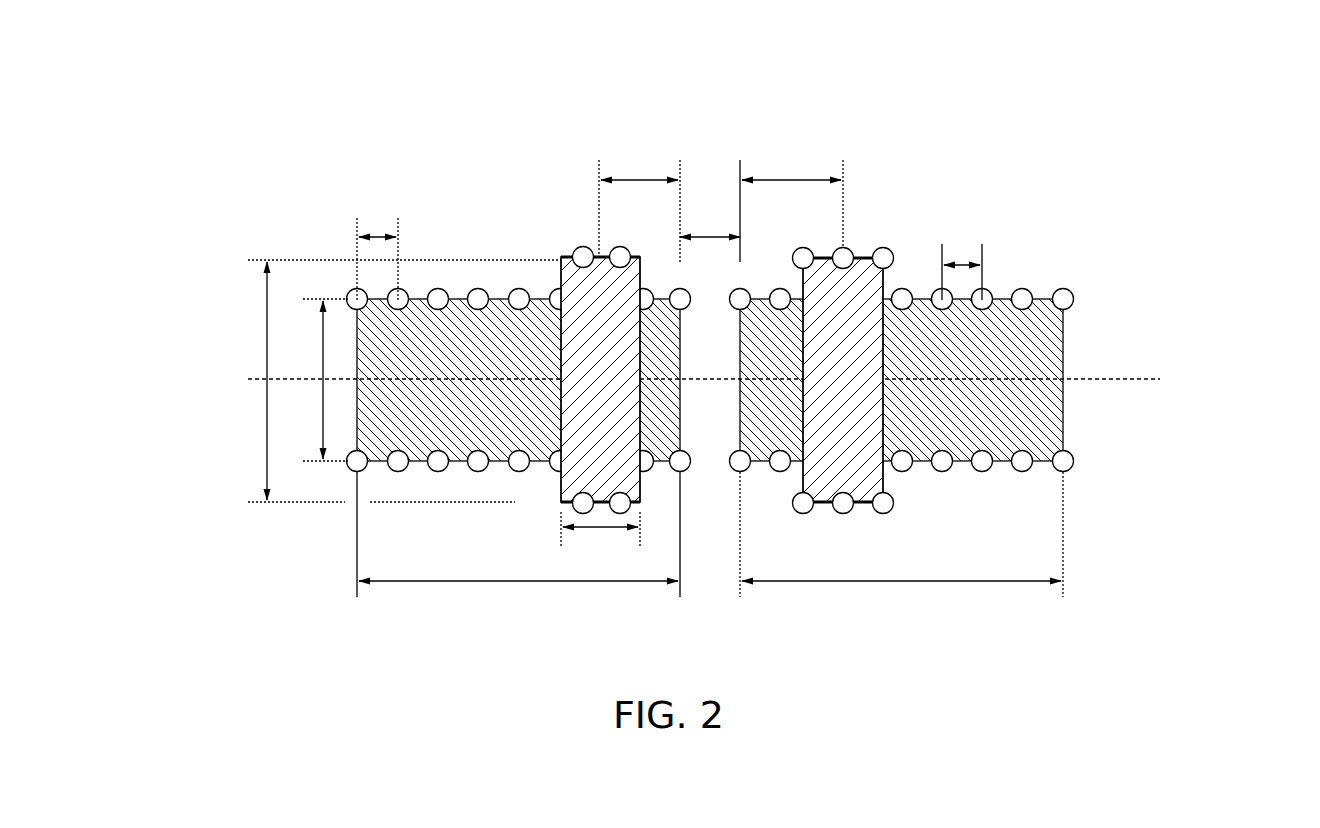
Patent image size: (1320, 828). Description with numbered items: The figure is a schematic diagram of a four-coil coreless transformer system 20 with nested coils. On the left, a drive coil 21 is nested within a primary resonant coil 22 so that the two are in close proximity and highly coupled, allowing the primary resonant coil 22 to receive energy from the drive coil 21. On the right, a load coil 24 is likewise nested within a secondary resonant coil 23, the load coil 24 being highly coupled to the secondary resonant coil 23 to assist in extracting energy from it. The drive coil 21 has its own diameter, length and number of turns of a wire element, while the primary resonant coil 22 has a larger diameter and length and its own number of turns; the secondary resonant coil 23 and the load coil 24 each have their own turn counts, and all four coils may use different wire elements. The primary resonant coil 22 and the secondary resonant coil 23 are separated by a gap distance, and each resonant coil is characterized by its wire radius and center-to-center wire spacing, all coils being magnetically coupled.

The 4-coil system 20 is at (651, 60).
The drive coil 21 is at (580, 452).
The primary resonant coil 22 is at (392, 322).
The secondary resonant coil 23 is at (988, 322).
The load coil 24 is at (930, 510).